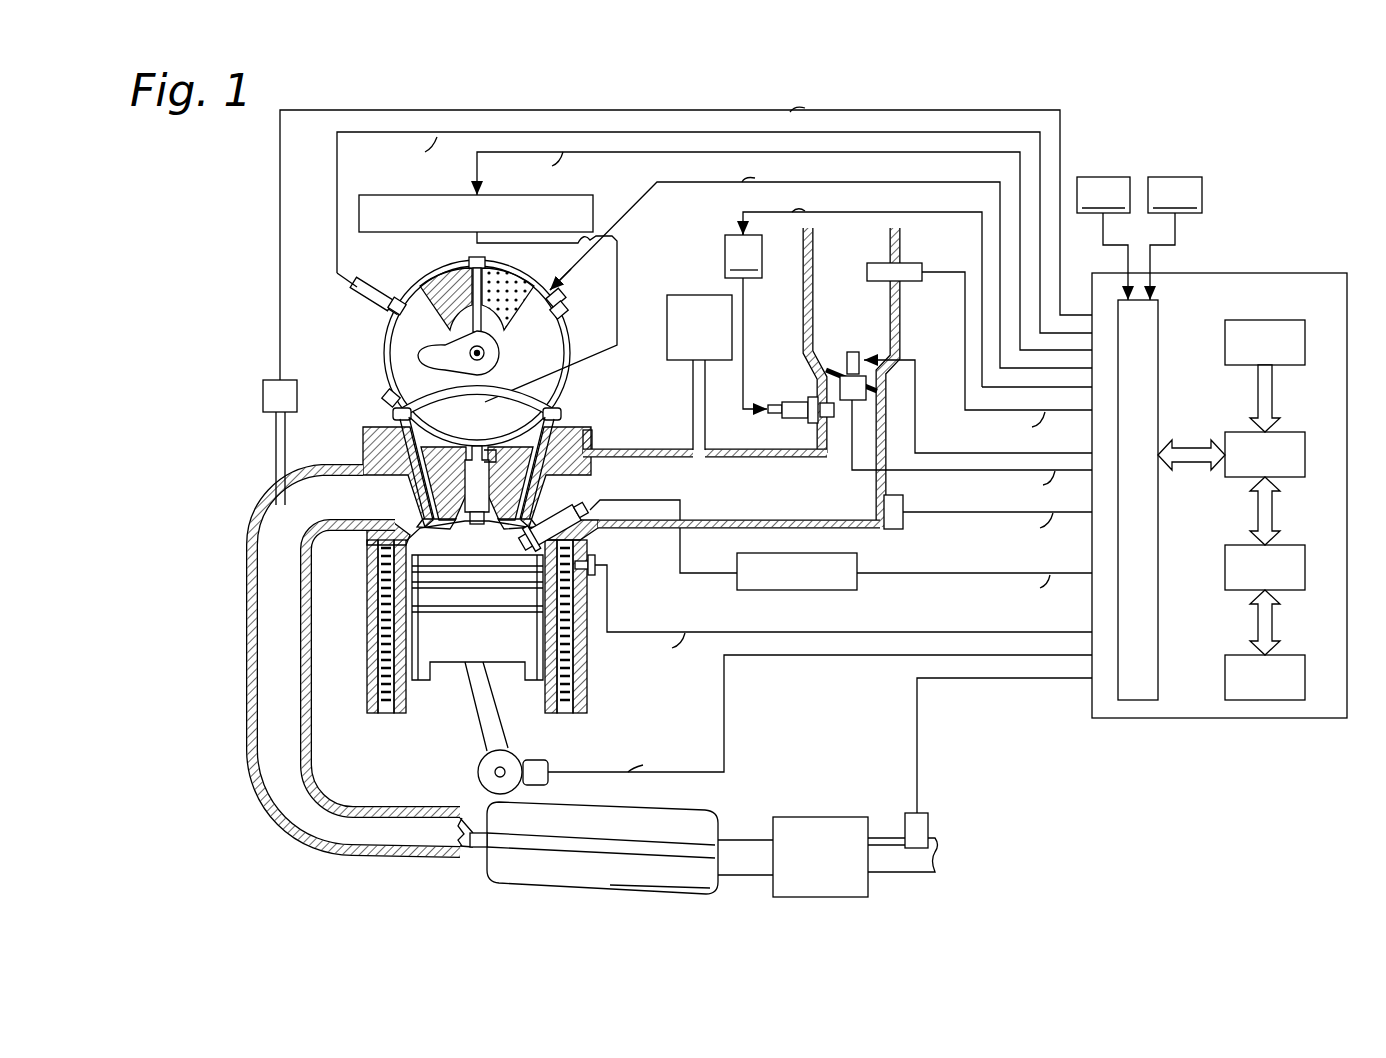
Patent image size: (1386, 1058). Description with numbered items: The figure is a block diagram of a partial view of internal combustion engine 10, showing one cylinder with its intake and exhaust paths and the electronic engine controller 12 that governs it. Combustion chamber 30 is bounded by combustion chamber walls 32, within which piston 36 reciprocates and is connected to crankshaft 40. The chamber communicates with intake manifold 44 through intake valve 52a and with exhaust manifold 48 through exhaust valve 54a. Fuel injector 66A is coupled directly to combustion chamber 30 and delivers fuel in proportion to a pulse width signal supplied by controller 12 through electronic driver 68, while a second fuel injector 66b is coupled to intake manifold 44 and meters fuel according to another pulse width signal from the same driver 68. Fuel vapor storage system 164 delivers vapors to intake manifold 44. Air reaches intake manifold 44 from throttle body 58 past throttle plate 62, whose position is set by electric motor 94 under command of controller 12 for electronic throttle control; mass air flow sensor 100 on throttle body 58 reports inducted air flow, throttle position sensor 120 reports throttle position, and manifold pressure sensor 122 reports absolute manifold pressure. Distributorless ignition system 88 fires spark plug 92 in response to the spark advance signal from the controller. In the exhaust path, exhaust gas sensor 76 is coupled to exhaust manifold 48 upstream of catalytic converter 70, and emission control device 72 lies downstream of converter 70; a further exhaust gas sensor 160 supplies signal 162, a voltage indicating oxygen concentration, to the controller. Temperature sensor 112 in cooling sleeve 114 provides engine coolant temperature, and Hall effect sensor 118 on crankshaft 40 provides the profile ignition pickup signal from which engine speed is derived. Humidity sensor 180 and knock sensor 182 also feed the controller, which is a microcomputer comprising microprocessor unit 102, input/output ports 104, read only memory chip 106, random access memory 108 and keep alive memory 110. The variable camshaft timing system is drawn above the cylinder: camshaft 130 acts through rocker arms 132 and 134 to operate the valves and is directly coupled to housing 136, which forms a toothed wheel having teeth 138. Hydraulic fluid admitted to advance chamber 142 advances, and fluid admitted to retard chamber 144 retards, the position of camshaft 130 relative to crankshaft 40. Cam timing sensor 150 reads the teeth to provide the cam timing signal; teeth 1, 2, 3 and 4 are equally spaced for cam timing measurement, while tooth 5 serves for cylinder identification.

The tooth 1 is at (470, 262).
The tooth 2 is at (563, 310).
The tooth 3 is at (496, 450).
The tooth 4 is at (387, 402).
The tooth 5 is at (394, 310).
The internal combustion engine 10 is at (652, 330).
The electronic engine controller 12 is at (1220, 479).
The combustion chamber 30 is at (433, 552).
The combustion chamber walls 32 is at (408, 716).
The piston 36 is at (478, 646).
The crankshaft 40 is at (488, 777).
The intake manifold 44 is at (795, 506).
The exhaust manifold 48 is at (256, 532).
The intake valve 52a is at (535, 510).
The exhaust valve 54a is at (424, 510).
The throttle body 58 is at (826, 424).
The throttle plate 62 is at (843, 378).
The fuel injector 66A is at (592, 534).
The fuel injector 66b is at (770, 414).
The electronic driver 68 is at (858, 563).
The catalytic converter 70 is at (565, 813).
The emission control device 72 is at (800, 817).
The exhaust gas sensor 76 is at (268, 380).
The distributorless ignition system 88 is at (589, 218).
The spark plug 92 is at (473, 446).
The electric motor 94 is at (854, 352).
The mass air flow sensor 100 is at (905, 264).
The microprocessor unit 102 is at (1290, 432).
The input/output ports 104 is at (1160, 346).
The read only memory chip 106 is at (1250, 320).
The random access memory 108 is at (1290, 545).
The keep alive memory 110 is at (1290, 655).
The temperature sensor 112 is at (596, 568).
The cooling sleeve 114 is at (568, 680).
The Hall effect sensor 118 is at (535, 758).
The throttle position sensor 120 is at (835, 392).
The manifold pressure sensor 122 is at (905, 500).
The camshaft 130 is at (432, 355).
The rocker arm 132 is at (398, 411).
The rocker arm 134 is at (548, 411).
The housing 136 is at (384, 388).
The teeth 138 is at (552, 304).
The advance chamber 142 is at (497, 290).
The retard chamber 144 is at (448, 290).
The cam timing sensor 150 is at (364, 299).
The exhaust gas sensor 160 is at (929, 820).
The signal 162 is at (984, 678).
The fuel vapor storage system 164 is at (712, 295).
The humidity sensor 180 is at (1103, 238).
The knock sensor 182 is at (1175, 238).